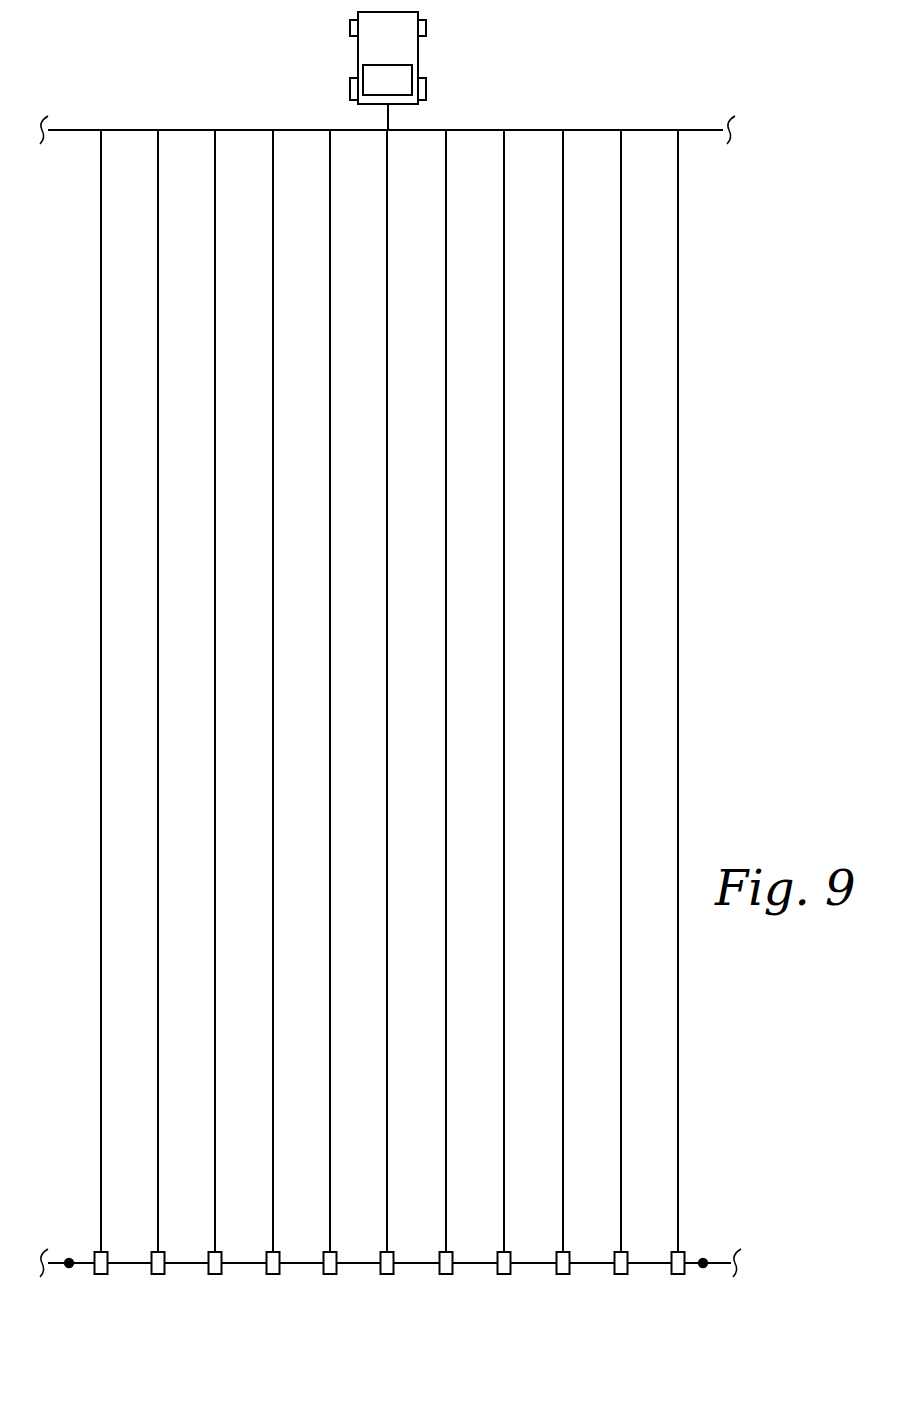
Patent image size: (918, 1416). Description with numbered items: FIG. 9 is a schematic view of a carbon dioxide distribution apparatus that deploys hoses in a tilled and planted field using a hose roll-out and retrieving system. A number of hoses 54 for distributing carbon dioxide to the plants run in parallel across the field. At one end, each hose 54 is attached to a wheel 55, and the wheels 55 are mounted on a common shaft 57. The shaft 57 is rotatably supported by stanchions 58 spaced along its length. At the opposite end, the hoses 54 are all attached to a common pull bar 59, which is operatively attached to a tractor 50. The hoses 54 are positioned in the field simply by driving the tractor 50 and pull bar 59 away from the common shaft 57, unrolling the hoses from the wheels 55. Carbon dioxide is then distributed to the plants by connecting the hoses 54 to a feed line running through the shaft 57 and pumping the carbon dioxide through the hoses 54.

The tractor 50 is at (418, 52).
The hoses 54 is at (622, 430).
The wheels 55 is at (621, 1275).
The common shaft 57 is at (133, 1263).
The stanchions 58 is at (69, 1268).
The common pull bar 59 is at (575, 130).